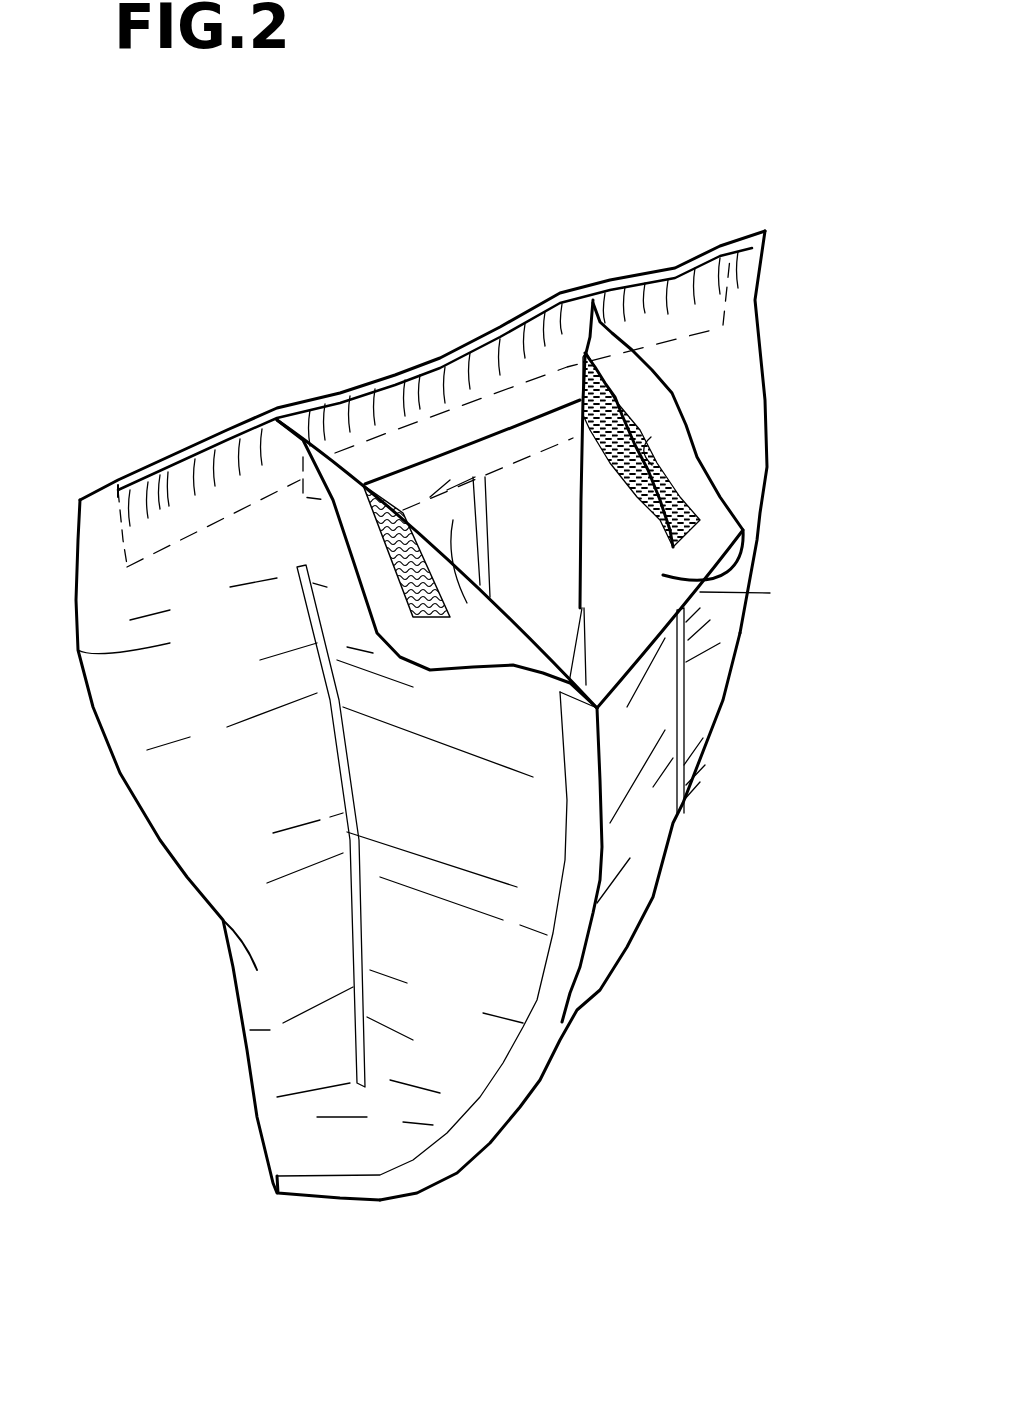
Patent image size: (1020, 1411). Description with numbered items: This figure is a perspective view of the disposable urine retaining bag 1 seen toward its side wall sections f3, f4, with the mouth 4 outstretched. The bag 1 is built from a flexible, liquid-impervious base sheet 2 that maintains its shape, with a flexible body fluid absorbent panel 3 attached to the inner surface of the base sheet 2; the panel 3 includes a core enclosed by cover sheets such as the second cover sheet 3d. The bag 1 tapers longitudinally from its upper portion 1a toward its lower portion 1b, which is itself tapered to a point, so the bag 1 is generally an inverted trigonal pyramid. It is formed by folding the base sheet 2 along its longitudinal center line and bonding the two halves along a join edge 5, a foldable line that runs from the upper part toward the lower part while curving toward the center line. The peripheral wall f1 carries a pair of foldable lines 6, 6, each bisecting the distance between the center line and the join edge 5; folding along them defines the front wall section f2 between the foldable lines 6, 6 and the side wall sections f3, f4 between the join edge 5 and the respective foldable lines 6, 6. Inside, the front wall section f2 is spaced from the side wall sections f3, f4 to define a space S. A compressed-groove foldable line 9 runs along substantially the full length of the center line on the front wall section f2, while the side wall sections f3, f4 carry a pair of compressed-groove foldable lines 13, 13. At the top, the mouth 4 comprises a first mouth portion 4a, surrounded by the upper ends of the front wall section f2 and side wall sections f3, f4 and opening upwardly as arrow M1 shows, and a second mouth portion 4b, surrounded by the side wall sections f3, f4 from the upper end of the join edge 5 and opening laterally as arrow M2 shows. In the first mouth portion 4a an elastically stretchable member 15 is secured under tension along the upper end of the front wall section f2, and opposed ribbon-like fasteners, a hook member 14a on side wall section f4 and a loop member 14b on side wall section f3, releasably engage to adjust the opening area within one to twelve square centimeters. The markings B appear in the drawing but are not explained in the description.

The disposable urine retaining bag 1 is at (748, 160).
The upper portion 1a is at (717, 347).
The lower portion 1b is at (375, 1147).
The base sheet 2 is at (297, 1128).
The body fluid absorbent panel 3 is at (550, 440).
The second cover sheet 3d is at (397, 477).
The mouth 4 is at (437, 564).
The first mouth portion 4a is at (560, 365).
The second mouth portion 4b is at (761, 598).
The join edge 5 is at (507, 1103).
The foldable lines 6 is at (120, 773).
The foldable line 9 is at (480, 530).
The foldable lines 13 is at (353, 900).
The hook member 14a is at (723, 418).
The loop member 14b is at (400, 540).
The elastically stretchable member 15 is at (228, 420).
The space S is at (560, 650).
The peripheral wall f1 is at (517, 978).
The front wall section f2 is at (430, 425).
The side wall section f3 is at (203, 870).
The side wall section f4 is at (633, 892).
The arrow M1 is at (439, 463).
The arrow M2 is at (510, 577).
The section line B is at (458, 313).